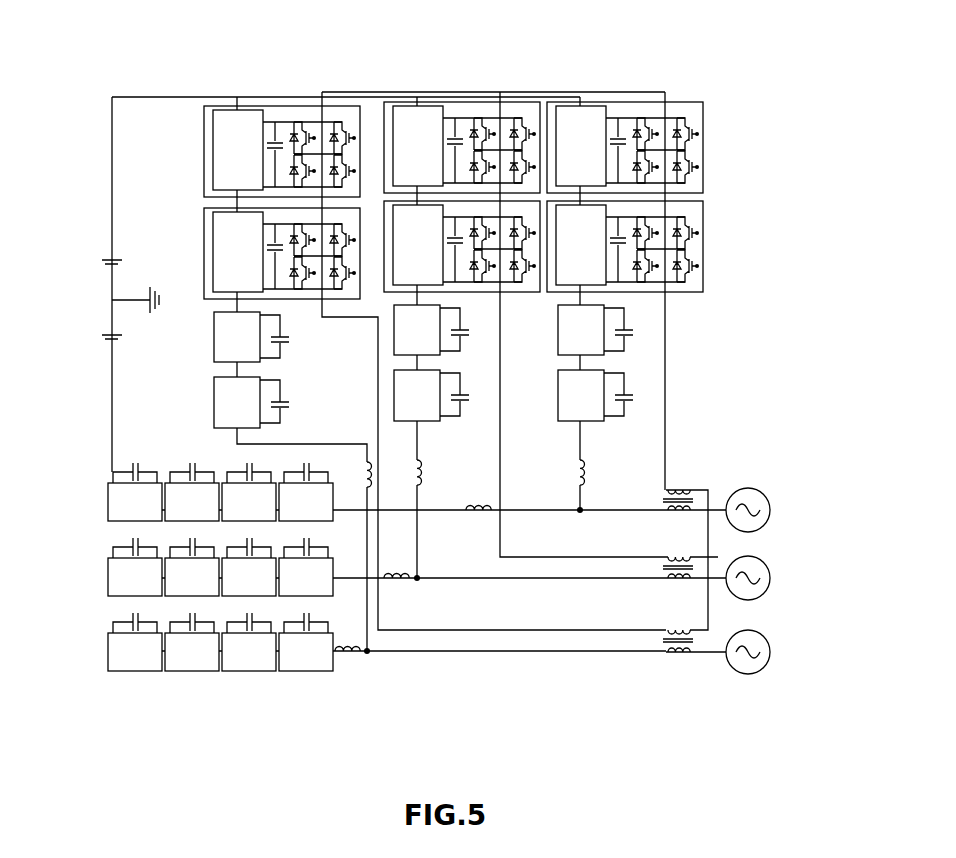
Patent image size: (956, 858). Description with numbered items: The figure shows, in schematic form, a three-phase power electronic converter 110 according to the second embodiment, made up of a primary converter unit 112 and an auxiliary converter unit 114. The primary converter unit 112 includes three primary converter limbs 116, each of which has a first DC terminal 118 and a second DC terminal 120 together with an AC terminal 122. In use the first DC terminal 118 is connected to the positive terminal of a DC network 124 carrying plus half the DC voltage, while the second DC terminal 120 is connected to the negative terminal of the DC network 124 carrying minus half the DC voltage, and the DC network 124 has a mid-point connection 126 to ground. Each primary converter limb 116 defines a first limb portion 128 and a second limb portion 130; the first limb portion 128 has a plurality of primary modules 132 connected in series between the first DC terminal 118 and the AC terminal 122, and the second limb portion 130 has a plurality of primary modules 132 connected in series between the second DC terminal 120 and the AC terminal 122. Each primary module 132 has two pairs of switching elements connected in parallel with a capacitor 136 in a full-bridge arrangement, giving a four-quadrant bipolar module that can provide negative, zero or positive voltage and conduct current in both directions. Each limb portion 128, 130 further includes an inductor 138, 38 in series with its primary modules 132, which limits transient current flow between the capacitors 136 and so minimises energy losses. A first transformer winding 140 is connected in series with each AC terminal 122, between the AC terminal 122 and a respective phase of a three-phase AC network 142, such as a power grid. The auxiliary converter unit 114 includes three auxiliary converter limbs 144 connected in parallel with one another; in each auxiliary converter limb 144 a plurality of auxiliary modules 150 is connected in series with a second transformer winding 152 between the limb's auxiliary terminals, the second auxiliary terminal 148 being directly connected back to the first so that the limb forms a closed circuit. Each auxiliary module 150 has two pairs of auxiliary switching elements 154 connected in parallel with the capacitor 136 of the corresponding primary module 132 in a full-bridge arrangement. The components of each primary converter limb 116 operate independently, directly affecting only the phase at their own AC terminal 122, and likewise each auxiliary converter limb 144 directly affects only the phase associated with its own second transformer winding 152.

The power electronic converter 110 is at (715, 407).
The primary converter unit 112 is at (460, 662).
The auxiliary converter unit 114 is at (497, 50).
The primary converter limb 116 is at (237, 75).
The first DC terminal 118 is at (237, 95).
The second DC terminal 120 is at (110, 472).
The AC terminal 122 is at (580, 513).
The DC network 124 is at (98, 276).
The mid-point connection 126 is at (110, 300).
The first limb portion 128 is at (178, 150).
The second limb portion 130 is at (167, 463).
The primary module 132 is at (218, 227).
The capacitor 136 is at (271, 130).
The inductor 138 is at (366, 472).
The inductor 38 is at (583, 472).
The first transformer winding 140 is at (668, 509).
The three-phase AC network 142 is at (770, 525).
The auxiliary converter limb 144 is at (322, 90).
The second auxiliary terminal 148 is at (497, 58).
The auxiliary module 150 is at (710, 155).
The second transformer winding 152 is at (684, 491).
The auxiliary switching element 154 is at (692, 107).